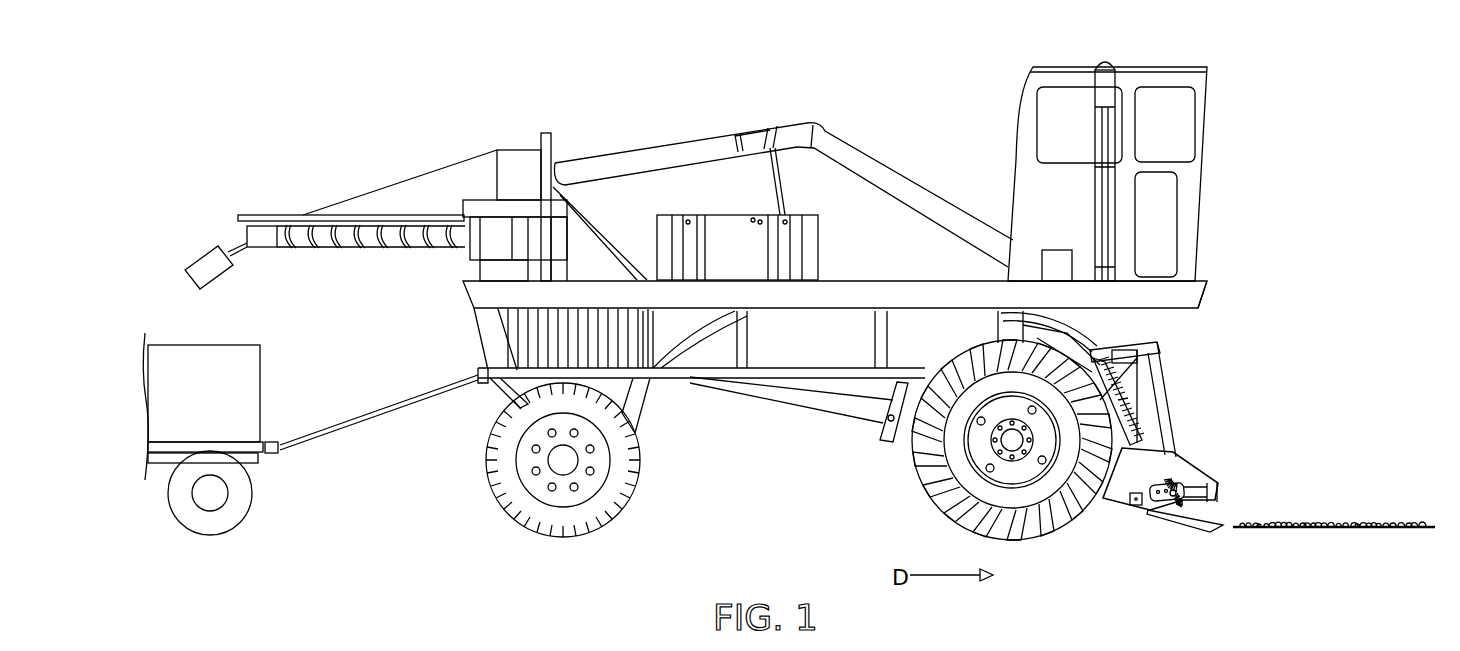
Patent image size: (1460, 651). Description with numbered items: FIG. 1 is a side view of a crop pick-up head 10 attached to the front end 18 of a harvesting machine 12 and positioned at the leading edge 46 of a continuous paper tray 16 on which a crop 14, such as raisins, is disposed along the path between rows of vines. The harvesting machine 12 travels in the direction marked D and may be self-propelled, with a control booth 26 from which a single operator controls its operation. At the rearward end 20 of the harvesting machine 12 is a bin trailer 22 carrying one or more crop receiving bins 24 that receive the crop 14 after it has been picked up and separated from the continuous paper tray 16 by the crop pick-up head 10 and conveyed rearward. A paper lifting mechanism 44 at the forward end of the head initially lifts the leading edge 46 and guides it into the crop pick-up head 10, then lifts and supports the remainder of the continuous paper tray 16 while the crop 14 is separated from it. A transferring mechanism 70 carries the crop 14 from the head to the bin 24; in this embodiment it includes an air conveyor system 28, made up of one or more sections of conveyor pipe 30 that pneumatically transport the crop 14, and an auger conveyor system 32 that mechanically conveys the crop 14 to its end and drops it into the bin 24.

The crop pick-up head 10 is at (1188, 452).
The harvesting machine 12 is at (745, 421).
The crop 14 is at (1302, 515).
The continuous paper tray 16 is at (1360, 533).
The front end 18 is at (1227, 252).
The rearward end 20 is at (495, 147).
The bin trailer 22 is at (273, 470).
The crop receiving bin 24 is at (245, 383).
The control booth 26 is at (1190, 172).
The air conveyor system 28 is at (840, 116).
The conveyor pipe 30 is at (663, 155).
The auger conveyor system 32 is at (333, 192).
The paper lifting mechanism 44 is at (1158, 515).
The leading edge 46 is at (1235, 530).
The transferring mechanism 70 is at (738, 100).